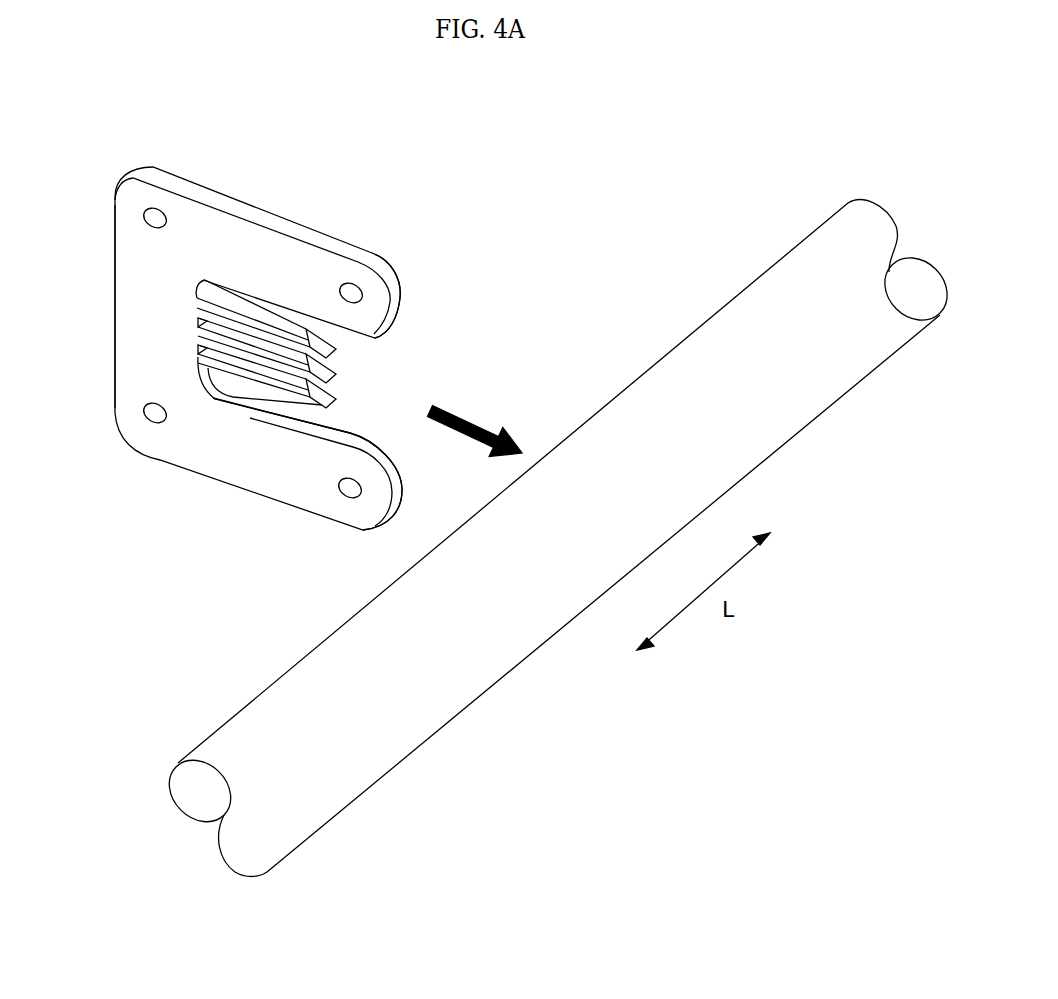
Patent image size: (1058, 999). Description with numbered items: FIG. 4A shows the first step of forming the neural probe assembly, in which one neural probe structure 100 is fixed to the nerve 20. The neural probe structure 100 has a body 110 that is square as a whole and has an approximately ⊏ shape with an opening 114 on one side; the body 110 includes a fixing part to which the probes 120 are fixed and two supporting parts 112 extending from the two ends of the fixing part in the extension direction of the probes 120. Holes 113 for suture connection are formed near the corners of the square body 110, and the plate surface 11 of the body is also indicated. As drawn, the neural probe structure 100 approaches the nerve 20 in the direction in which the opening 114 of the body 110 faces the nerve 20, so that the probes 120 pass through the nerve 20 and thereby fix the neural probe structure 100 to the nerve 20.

The neural probe structure 100 is at (258, 231).
The body 110 is at (210, 194).
The plate surface 11 is at (140, 324).
The holes 113 is at (147, 216).
The supporting parts 112 is at (317, 256).
The opening 114 is at (365, 380).
The probes 120 is at (304, 332).
The nerve 20 is at (738, 322).